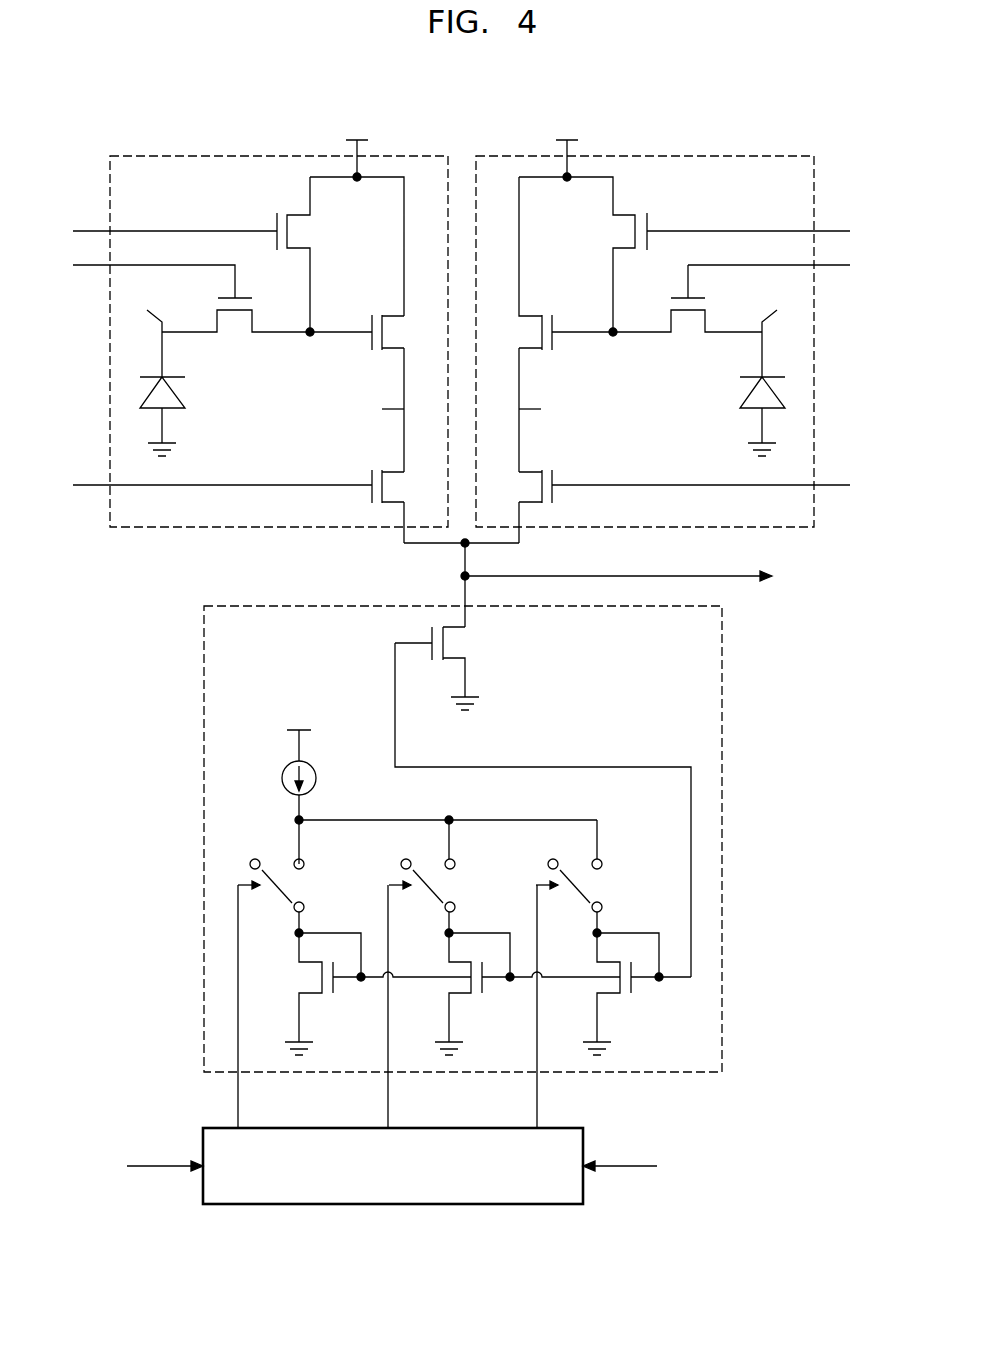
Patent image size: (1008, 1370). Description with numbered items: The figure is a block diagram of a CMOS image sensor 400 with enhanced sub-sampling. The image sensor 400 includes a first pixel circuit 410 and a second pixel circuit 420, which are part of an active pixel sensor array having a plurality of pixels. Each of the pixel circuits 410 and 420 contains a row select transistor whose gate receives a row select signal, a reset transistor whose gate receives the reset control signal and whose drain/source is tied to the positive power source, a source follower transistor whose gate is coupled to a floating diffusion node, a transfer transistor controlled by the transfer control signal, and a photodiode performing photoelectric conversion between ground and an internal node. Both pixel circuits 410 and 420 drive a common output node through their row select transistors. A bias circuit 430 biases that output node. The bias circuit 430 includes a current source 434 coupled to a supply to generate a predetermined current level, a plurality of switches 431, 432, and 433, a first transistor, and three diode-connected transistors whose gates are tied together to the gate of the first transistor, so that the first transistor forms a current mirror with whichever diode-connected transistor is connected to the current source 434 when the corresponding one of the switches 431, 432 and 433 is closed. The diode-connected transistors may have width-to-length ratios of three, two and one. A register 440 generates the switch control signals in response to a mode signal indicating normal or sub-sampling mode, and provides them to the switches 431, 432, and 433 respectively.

The CMOS image sensor 400 is at (830, 128).
The first pixel circuit 410 is at (232, 156).
The second pixel circuit 420 is at (680, 156).
The bias circuit 430 is at (204, 858).
The first switch 431 is at (302, 885).
The second switch 432 is at (452, 885).
The third switch 433 is at (600, 885).
The current source 434 is at (312, 767).
The register 440 is at (583, 1128).